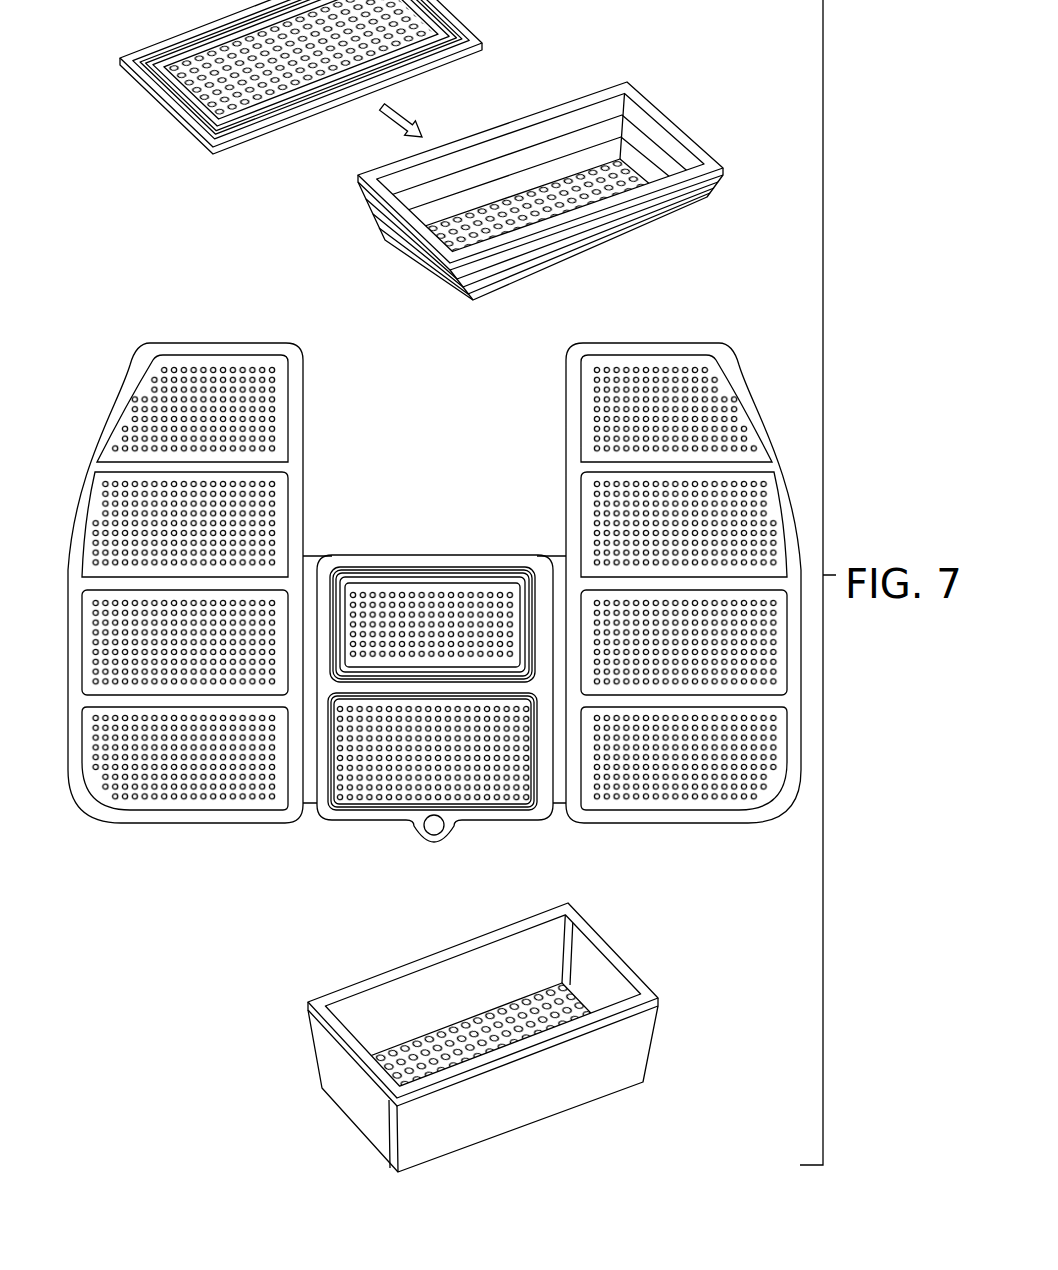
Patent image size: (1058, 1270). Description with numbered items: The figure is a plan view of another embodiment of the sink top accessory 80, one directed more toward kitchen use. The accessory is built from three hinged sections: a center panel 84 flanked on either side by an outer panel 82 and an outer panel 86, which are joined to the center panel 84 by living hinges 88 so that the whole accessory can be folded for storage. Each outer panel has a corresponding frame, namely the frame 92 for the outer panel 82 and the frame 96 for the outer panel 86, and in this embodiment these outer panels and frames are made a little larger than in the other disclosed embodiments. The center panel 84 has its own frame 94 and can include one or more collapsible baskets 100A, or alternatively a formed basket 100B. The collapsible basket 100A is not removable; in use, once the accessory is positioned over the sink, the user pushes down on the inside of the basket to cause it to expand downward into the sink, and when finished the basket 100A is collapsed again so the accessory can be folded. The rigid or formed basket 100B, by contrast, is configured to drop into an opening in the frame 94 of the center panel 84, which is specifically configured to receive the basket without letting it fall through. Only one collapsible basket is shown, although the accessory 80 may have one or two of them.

The sink top accessory 80 is at (92, 182).
The outer panel 82 is at (147, 385).
The center panel 84 is at (362, 815).
The outer panel 86 is at (714, 370).
The living hinge 88 is at (312, 565).
The frame 92 is at (103, 422).
The frame 94 is at (522, 562).
The frame 96 is at (742, 388).
The collapsible basket 100A is at (430, 587).
The formed basket 100B is at (314, 803).